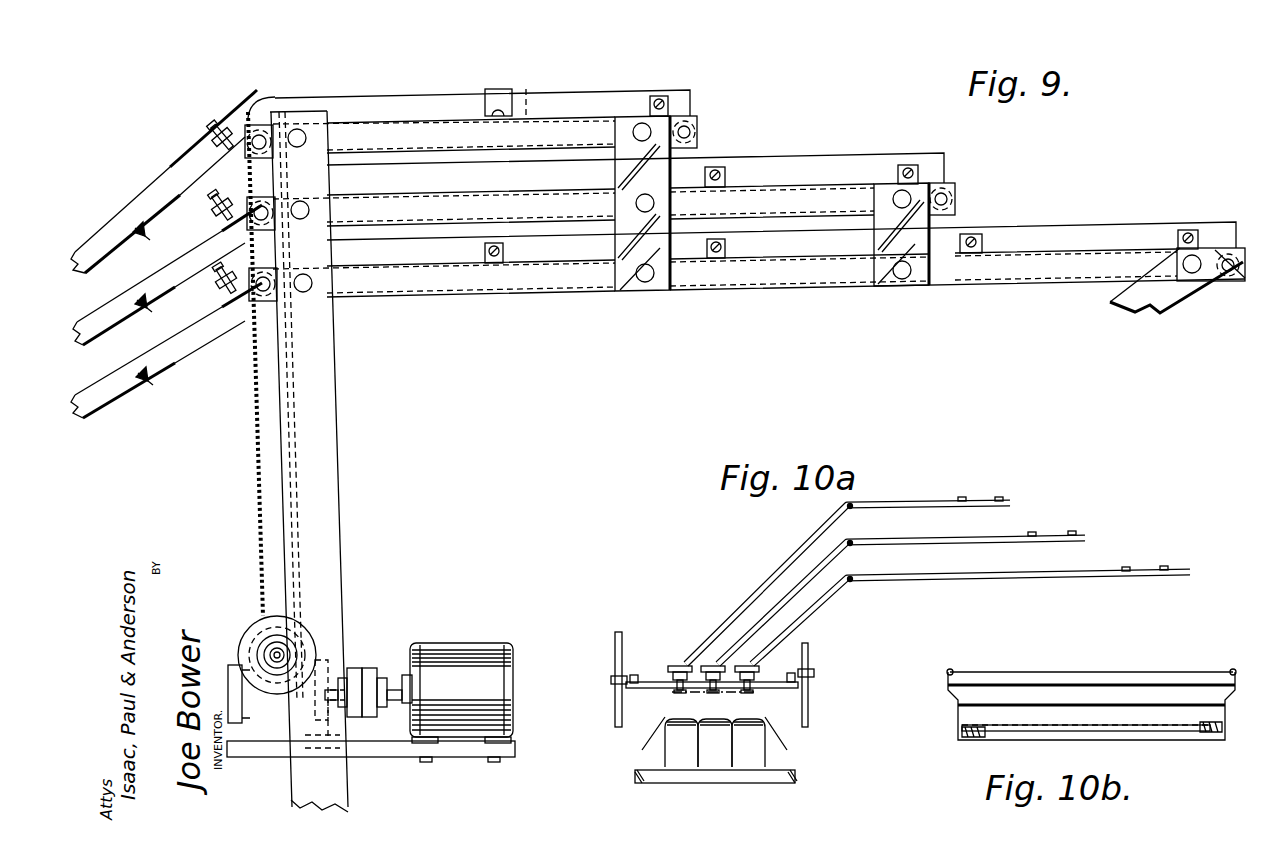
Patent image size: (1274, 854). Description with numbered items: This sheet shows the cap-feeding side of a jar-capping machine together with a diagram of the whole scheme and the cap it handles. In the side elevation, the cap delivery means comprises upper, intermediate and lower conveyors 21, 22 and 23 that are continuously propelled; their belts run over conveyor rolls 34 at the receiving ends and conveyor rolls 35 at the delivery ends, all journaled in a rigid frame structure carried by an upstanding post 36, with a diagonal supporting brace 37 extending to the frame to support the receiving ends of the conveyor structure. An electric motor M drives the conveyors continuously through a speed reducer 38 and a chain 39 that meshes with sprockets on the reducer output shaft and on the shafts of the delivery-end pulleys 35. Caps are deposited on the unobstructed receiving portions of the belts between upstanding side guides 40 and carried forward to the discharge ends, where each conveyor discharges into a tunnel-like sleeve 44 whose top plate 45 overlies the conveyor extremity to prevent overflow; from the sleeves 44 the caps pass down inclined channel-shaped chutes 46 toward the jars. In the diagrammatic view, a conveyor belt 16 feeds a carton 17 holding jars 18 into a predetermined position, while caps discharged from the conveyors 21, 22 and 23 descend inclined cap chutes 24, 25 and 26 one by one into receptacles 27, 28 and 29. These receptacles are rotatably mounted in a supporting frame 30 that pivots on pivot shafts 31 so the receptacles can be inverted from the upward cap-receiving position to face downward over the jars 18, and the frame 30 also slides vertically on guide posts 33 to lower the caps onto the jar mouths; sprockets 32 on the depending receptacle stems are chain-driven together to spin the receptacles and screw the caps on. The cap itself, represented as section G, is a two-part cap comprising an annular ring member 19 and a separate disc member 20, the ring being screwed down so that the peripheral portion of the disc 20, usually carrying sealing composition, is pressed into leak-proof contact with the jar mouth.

In FIG. 10A, the conveyor belt 16 is at (795, 771).
In FIG. 10A, the carton 17 is at (663, 752).
In FIG. 10A, the jars 18 is at (715, 743).
In FIG. 10B, the annular ring member 19 is at (1237, 710).
In FIG. 10B, the disc member 20 is at (1170, 731).
In FIG. 9, the upper conveyor 21 is at (573, 120).
In FIG. 10A, the upper conveyor 21 is at (935, 500).
In FIG. 9, the intermediate conveyor 22 is at (760, 182).
In FIG. 10A, the intermediate conveyor 22 is at (1033, 527).
In FIG. 9, the lower conveyor 23 is at (1092, 250).
In FIG. 10A, the lower conveyor 23 is at (1120, 560).
In FIG. 10A, the inclined cap chute 24 is at (790, 562).
In FIG. 10A, the inclined cap chute 25 is at (800, 598).
In FIG. 10A, the inclined cap chute 26 is at (833, 600).
In FIG. 10A, the receptacle 27 is at (678, 666).
In FIG. 10A, the receptacle 28 is at (713, 666).
In FIG. 10A, the receptacle 29 is at (760, 677).
In FIG. 10A, the supporting frame 30 is at (648, 681).
In FIG. 10A, the pivot shafts 31 is at (618, 676).
In FIG. 10A, the sprockets 32 is at (686, 692).
In FIG. 10A, the guide posts 33 is at (615, 706).
In FIG. 9, the conveyor rolls 34 is at (697, 118).
In FIG. 9, the conveyor rolls 35 is at (262, 122).
In FIG. 9, the upstanding post 36 is at (338, 479).
In FIG. 9, the diagonal supporting brace 37 is at (1158, 303).
In FIG. 9, the speed reducer 38 is at (258, 630).
In FIG. 9, the chain 39 is at (254, 439).
In FIG. 9, the side guides 40 is at (393, 100).
In FIG. 9, the tunnel-like sleeve 44 is at (175, 180).
In FIG. 9, the top plate 45 is at (208, 136).
In FIG. 9, the inclined tracks or chutes 46 is at (118, 227).
In FIG. 9, the electric motor M is at (452, 645).
In FIG. 10B, the trough section G is at (1193, 670).